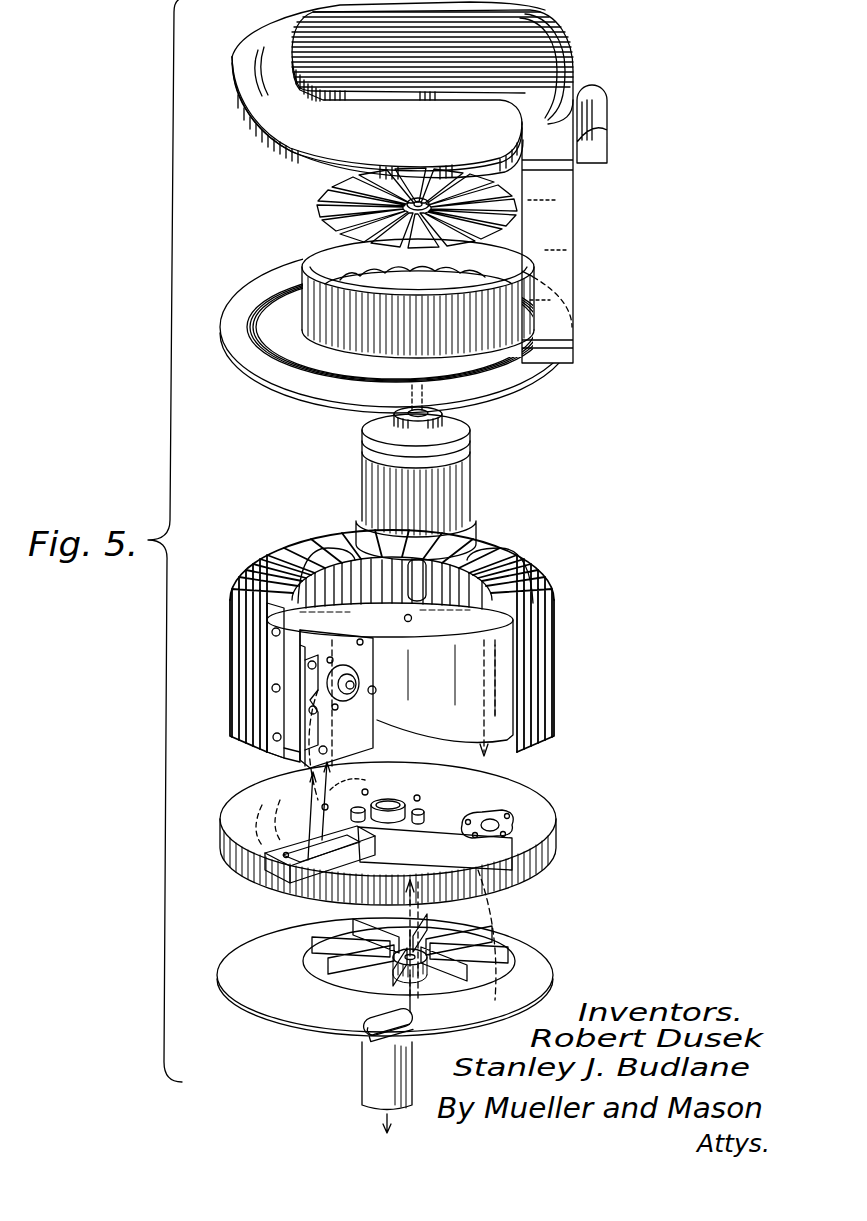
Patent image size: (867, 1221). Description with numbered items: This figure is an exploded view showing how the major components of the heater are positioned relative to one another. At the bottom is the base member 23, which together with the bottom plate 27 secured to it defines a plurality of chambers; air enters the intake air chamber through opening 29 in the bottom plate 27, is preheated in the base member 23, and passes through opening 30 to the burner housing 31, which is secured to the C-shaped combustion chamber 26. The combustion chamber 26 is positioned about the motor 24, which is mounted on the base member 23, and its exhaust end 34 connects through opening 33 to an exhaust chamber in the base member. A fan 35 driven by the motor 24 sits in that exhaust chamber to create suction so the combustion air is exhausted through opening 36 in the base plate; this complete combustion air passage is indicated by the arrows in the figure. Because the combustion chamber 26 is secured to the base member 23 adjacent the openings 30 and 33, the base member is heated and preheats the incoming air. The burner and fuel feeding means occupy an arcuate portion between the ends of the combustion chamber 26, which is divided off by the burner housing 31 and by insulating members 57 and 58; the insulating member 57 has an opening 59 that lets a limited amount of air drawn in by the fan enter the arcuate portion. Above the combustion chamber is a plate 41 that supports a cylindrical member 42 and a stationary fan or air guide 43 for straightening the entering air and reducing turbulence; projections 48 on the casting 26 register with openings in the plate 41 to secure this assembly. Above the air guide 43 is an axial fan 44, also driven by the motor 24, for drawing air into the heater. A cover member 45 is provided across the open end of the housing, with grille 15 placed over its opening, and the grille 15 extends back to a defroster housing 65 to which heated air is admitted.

The grille 15 is at (575, 70).
The cover member 45 is at (282, 135).
The defroster housing 65 is at (572, 250).
The axial fan 44 is at (315, 210).
The cylindrical member 42 is at (303, 258).
The stationary fan or air guide 43 is at (400, 290).
The plate 41 is at (248, 362).
The motor 24 is at (473, 473).
The projections 48 is at (347, 537).
The C-shaped combustion chamber 26 is at (553, 630).
The exhaust end 34 is at (515, 741).
The opening 59 is at (410, 622).
The burner housing 31 is at (293, 740).
The insulating member 57 is at (290, 610).
The insulating member 58 is at (490, 733).
The base member 23 is at (547, 832).
The opening 33 is at (510, 822).
The opening 30 is at (307, 840).
The opening 29 is at (380, 930).
The fan 35 is at (497, 943).
The bottom plate 27 is at (550, 973).
The opening 36 is at (362, 1043).